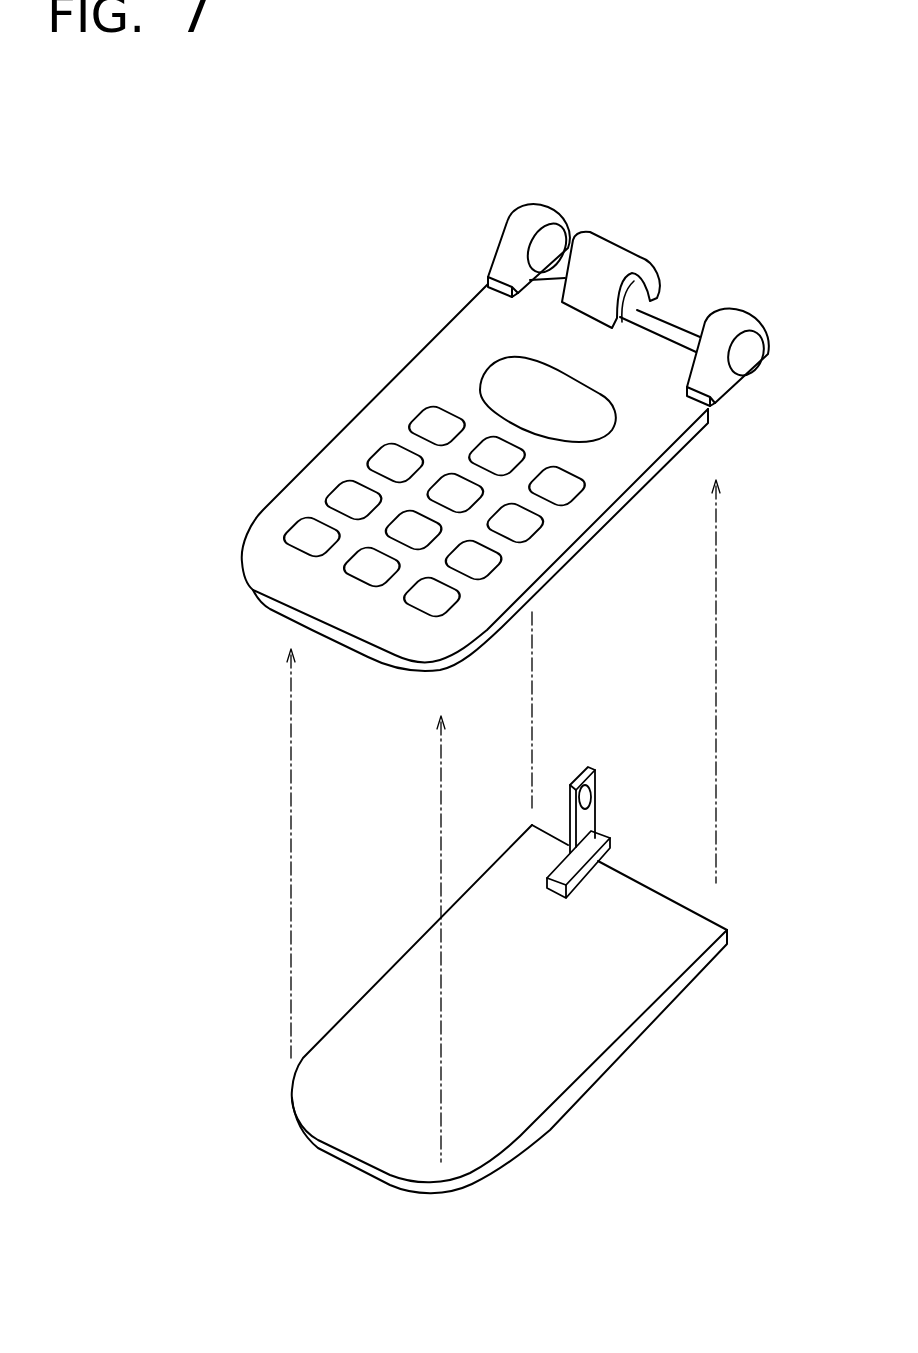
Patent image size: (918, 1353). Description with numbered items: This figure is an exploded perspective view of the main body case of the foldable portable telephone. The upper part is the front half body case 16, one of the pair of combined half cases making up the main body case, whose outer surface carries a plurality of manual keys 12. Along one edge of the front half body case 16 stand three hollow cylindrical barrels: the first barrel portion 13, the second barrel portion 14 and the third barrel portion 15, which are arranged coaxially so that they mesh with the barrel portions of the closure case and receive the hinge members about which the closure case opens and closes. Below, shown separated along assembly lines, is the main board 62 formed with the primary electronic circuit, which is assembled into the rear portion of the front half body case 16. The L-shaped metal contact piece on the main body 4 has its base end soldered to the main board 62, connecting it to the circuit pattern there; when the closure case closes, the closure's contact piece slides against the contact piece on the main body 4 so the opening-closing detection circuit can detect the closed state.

The front half body case 16 is at (380, 410).
The manual keys 12 is at (302, 532).
The third barrel portion 15 is at (508, 245).
The second barrel portion 14 is at (620, 264).
The first barrel portion 13 is at (735, 320).
The contact piece on the main body 4 is at (588, 818).
The main board 62 is at (600, 1043).